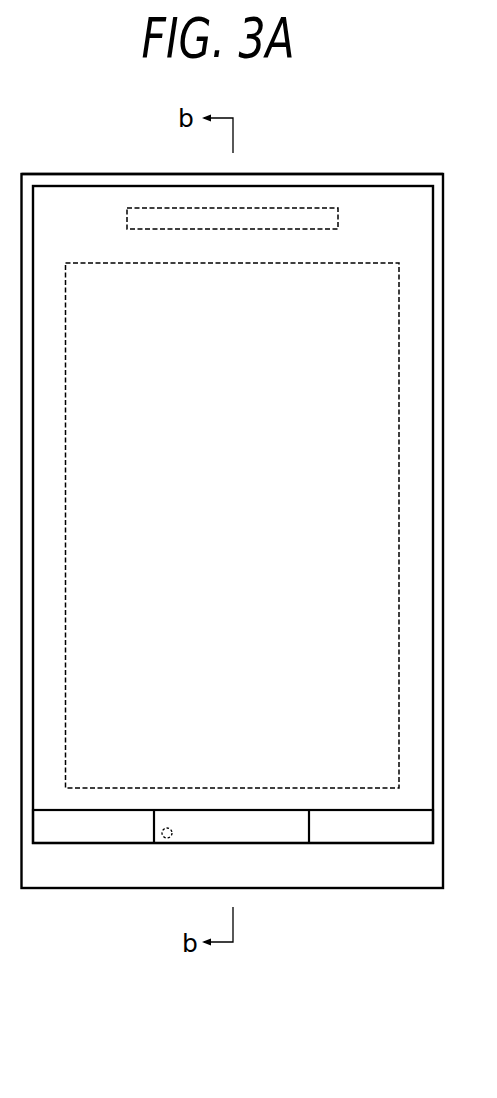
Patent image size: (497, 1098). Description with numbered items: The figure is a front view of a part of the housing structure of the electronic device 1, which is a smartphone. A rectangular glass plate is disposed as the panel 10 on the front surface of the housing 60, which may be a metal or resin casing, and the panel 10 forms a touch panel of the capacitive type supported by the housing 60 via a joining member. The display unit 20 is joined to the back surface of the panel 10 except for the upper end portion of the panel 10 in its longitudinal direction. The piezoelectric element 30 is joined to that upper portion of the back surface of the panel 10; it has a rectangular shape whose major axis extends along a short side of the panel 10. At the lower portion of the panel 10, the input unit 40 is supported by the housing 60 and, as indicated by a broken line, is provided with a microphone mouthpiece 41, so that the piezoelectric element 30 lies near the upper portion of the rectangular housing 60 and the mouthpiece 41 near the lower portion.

The electronic device 1 is at (88, 158).
The panel 10 is at (355, 185).
The display unit 20 is at (325, 263).
The piezoelectric element 30 is at (127, 217).
The input unit 40 is at (47, 833).
The microphone mouthpiece 41 is at (162, 842).
The housing 60 is at (267, 172).